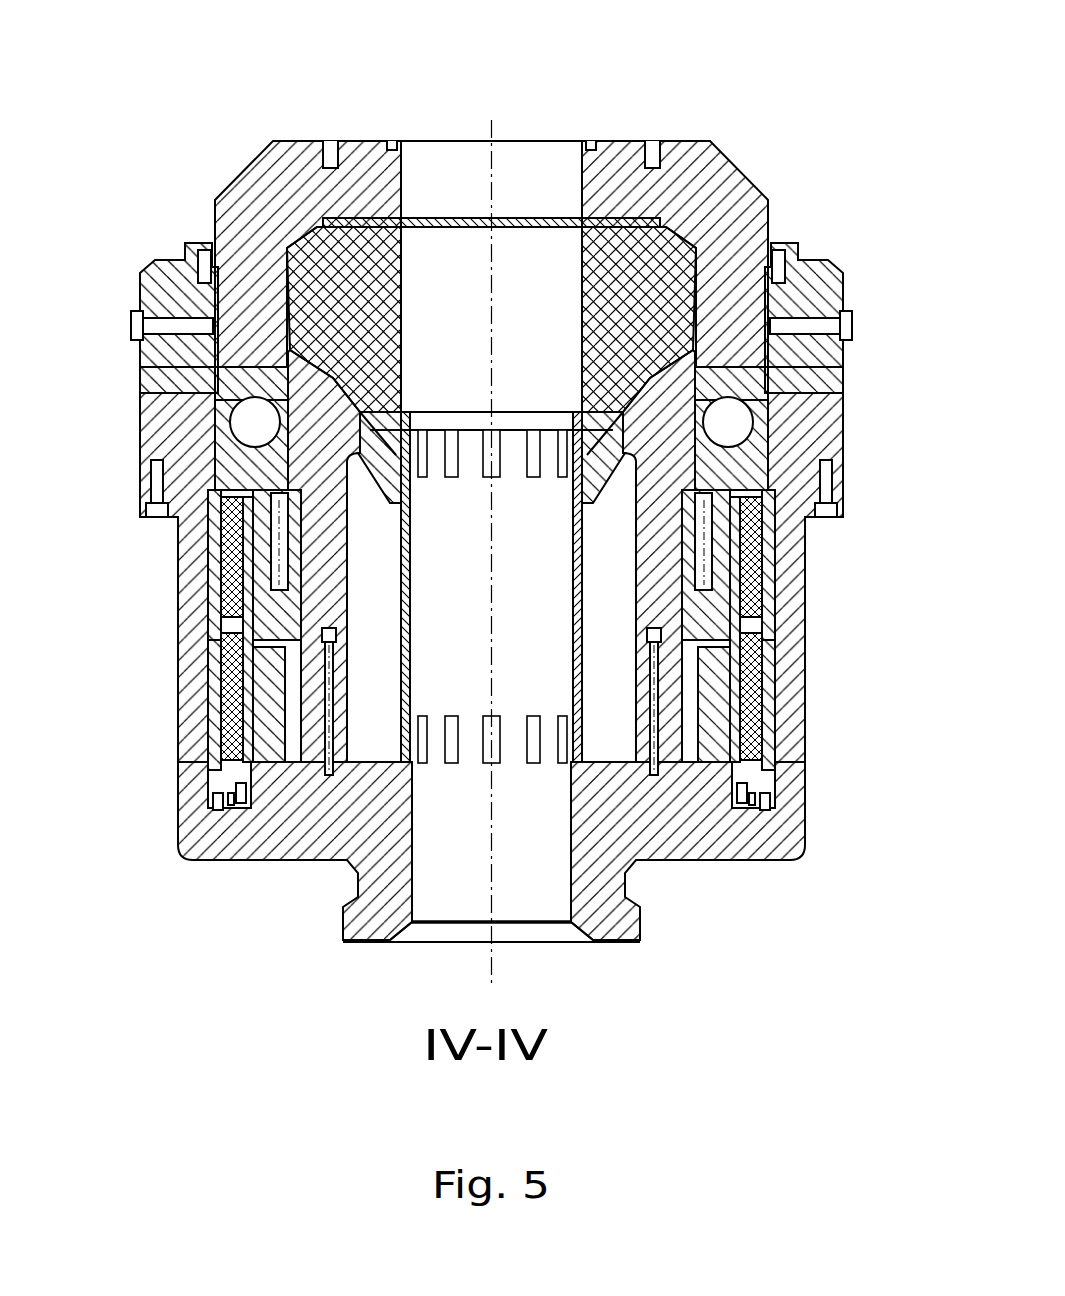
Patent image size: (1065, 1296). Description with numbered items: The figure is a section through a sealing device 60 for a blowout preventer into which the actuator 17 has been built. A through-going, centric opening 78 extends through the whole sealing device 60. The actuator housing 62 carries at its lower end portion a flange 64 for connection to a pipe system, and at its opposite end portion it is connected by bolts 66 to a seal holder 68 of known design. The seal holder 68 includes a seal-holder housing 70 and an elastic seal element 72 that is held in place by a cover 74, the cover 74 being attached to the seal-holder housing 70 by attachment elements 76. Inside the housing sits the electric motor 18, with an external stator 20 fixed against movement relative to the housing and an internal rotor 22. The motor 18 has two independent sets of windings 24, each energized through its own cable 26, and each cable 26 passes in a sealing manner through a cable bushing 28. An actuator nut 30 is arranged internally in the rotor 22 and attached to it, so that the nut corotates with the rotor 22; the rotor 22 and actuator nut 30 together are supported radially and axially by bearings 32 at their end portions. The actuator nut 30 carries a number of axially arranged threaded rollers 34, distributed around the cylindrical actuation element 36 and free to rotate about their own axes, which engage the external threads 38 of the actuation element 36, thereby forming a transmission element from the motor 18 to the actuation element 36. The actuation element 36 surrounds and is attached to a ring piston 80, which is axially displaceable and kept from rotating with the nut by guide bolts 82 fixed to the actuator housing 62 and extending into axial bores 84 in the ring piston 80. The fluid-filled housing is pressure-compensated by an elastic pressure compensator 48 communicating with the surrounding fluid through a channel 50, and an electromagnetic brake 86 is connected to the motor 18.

The actuator 17 is at (790, 542).
The electric motor 18 is at (195, 658).
The external stator 20 is at (215, 682).
The internal rotor 22 is at (215, 700).
The sets of windings 24 is at (235, 545).
The cables 26 is at (760, 450).
The cable bushing 28 is at (780, 420).
The actuator nut 30 is at (280, 608).
The bearings 32 is at (215, 490).
The threaded rollers 34 is at (228, 530).
The actuation element 36 is at (250, 500).
The external threads 38 is at (240, 620).
The elastic pressure compensator 48 is at (228, 393).
The channel 50 is at (215, 422).
The sealing device 60 is at (781, 140).
The actuator housing 62 is at (270, 830).
The flange 64 is at (610, 920).
The bolts 66 is at (830, 478).
The seal holder 68 is at (835, 258).
The seal-holder housing 70 is at (190, 385).
The elastic seal element 72 is at (290, 250).
The cover 74 is at (250, 190).
The attachment elements 76 is at (140, 318).
The centric opening 78 is at (570, 185).
The ring piston 80 is at (670, 590).
The guide bolts 82 is at (690, 665).
The axial bores 84 is at (680, 632).
The electromagnetic brake 86 is at (770, 790).